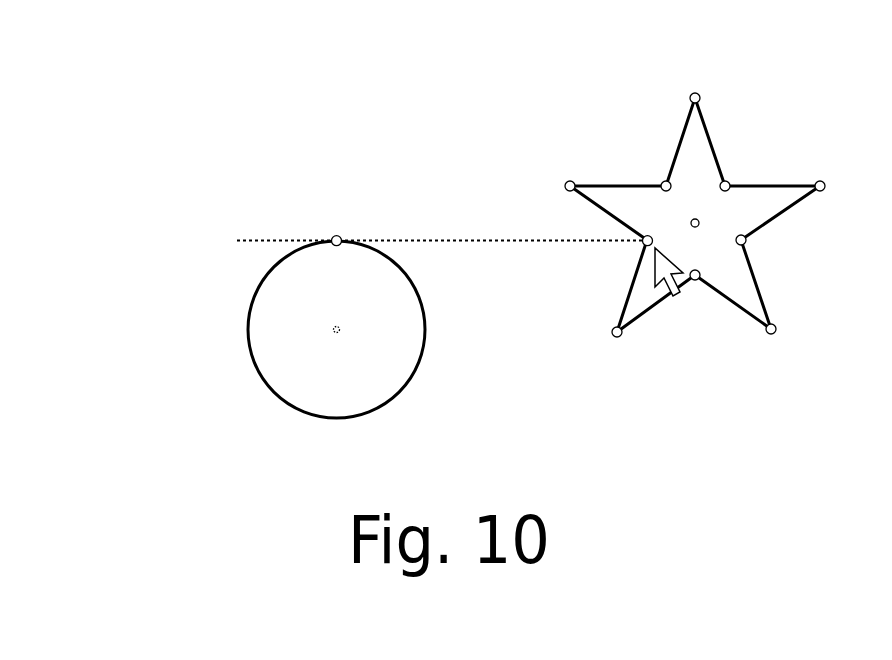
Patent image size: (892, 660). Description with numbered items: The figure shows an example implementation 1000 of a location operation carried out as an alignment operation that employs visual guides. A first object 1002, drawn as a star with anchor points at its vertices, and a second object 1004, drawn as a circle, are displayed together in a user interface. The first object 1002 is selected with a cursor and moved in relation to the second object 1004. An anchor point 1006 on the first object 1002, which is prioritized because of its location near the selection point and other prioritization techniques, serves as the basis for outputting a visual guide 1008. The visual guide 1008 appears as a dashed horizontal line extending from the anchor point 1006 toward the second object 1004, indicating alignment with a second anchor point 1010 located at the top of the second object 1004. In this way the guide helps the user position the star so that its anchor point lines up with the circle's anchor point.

The example implementation 1000 is at (172, 66).
The first object 1002 is at (710, 140).
The second object 1004 is at (287, 406).
The anchor point 1006 is at (642, 236).
The visual guide 1008 is at (472, 240).
The second anchor point 1010 is at (333, 236).